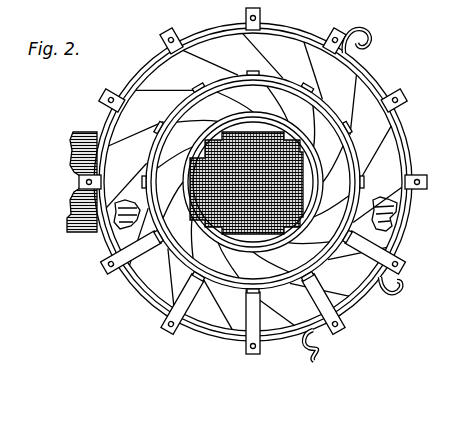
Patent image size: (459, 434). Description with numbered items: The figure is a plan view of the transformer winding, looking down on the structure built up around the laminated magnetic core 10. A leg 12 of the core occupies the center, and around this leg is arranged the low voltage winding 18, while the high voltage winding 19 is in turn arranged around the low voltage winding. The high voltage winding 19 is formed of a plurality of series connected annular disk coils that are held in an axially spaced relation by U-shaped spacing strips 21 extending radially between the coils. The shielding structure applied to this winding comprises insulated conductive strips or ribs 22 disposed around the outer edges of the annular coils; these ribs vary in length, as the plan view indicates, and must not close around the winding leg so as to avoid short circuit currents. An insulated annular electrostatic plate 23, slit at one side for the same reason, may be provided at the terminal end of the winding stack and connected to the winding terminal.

The laminated magnetic core 10 is at (83, 133).
The leg 12 is at (266, 144).
The low voltage winding 18 is at (343, 152).
The high voltage winding 19 is at (355, 280).
The U-shaped spacing strips 21 is at (419, 184).
The insulated conductive strips or ribs 22 is at (361, 38).
The insulated annular electrostatic plate 23 is at (397, 225).